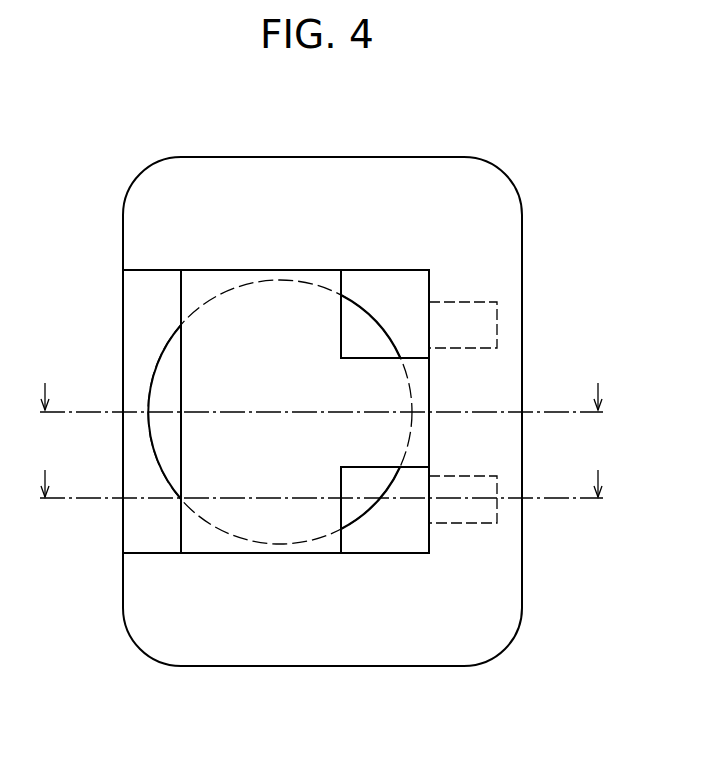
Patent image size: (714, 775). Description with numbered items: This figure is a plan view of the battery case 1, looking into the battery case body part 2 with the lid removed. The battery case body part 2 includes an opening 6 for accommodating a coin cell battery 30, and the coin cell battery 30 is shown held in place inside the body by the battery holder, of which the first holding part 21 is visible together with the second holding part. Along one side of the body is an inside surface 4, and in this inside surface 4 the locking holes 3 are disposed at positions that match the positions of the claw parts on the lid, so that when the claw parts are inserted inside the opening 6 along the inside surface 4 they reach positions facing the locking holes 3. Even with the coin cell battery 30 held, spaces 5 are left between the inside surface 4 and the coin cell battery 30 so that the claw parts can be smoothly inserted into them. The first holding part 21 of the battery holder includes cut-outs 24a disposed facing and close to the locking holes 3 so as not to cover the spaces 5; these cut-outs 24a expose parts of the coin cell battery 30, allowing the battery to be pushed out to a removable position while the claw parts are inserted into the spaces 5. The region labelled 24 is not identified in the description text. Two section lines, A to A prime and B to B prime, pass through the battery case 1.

The battery case 1 is at (108, 138).
The battery case body part 2 is at (255, 157).
The locking holes 3 is at (497, 345).
The inside surface 4 is at (424, 293).
The spaces 5 is at (377, 296).
The opening 6 is at (152, 312).
The first holding part 21 is at (278, 477).
The yoke 24 is at (405, 327).
The cut-outs 24a is at (392, 513).
The coin cell battery 30 is at (160, 362).